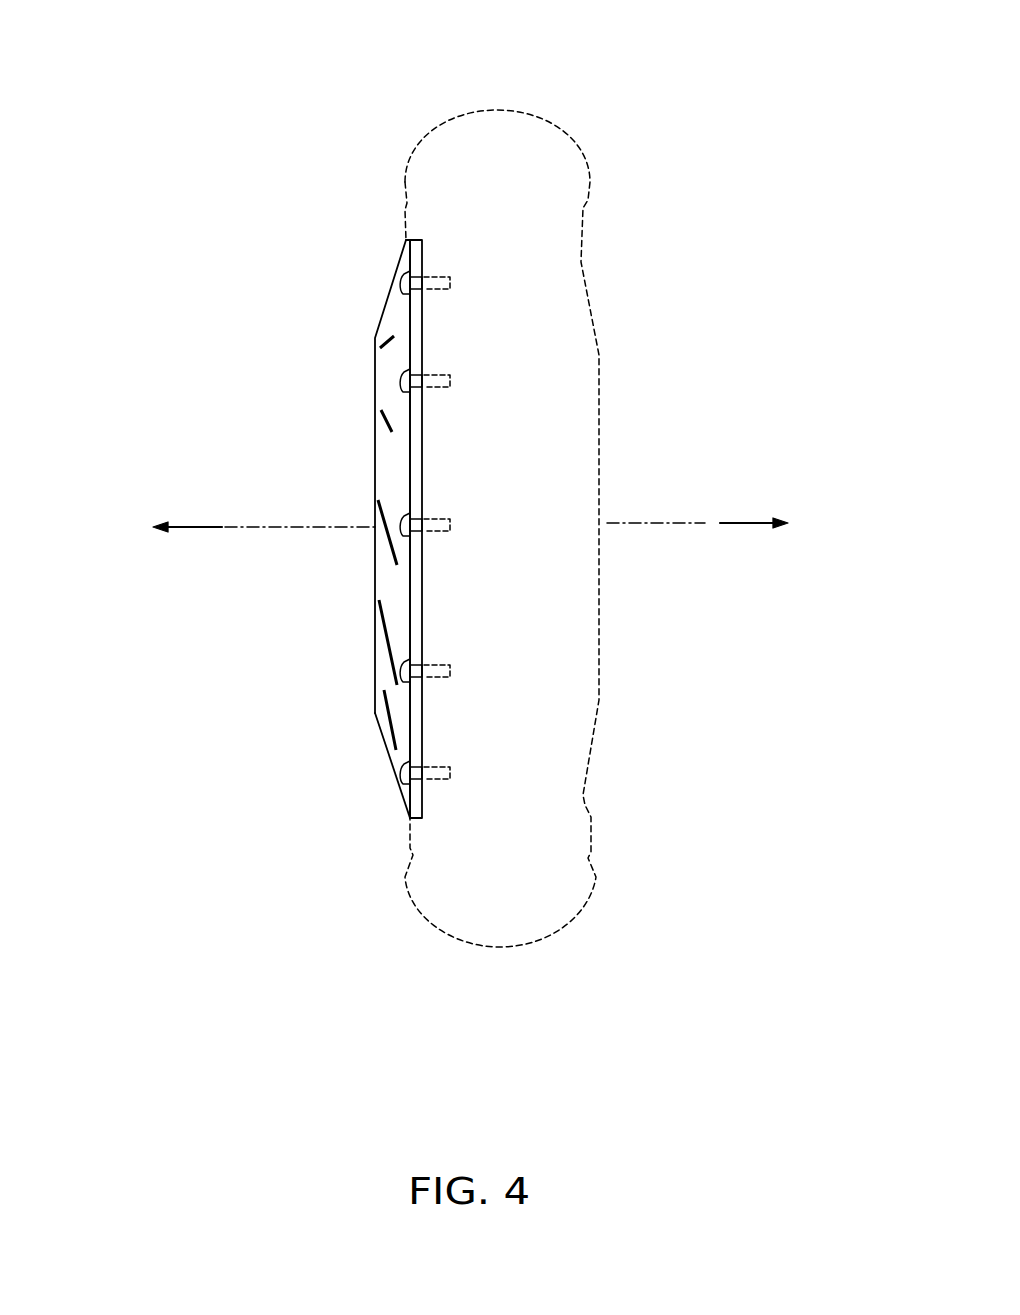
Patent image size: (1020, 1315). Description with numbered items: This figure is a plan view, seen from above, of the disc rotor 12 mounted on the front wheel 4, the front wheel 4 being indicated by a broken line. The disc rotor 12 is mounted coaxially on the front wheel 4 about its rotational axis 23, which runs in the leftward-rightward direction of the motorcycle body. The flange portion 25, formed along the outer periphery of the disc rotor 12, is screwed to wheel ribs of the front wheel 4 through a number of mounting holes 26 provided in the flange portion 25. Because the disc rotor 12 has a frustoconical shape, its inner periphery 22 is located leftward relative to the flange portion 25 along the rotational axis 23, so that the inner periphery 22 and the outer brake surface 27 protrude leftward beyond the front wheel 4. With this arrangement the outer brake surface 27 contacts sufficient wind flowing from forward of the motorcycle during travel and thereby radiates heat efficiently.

The front wheel 4 is at (497, 110).
The disc rotor 12 is at (469, 477).
The inner periphery 22 is at (377, 717).
The rotational axis 23 is at (657, 523).
The flange portion 25 is at (416, 611).
The mounting holes 26 is at (412, 530).
The outer brake surface 27 is at (387, 371).